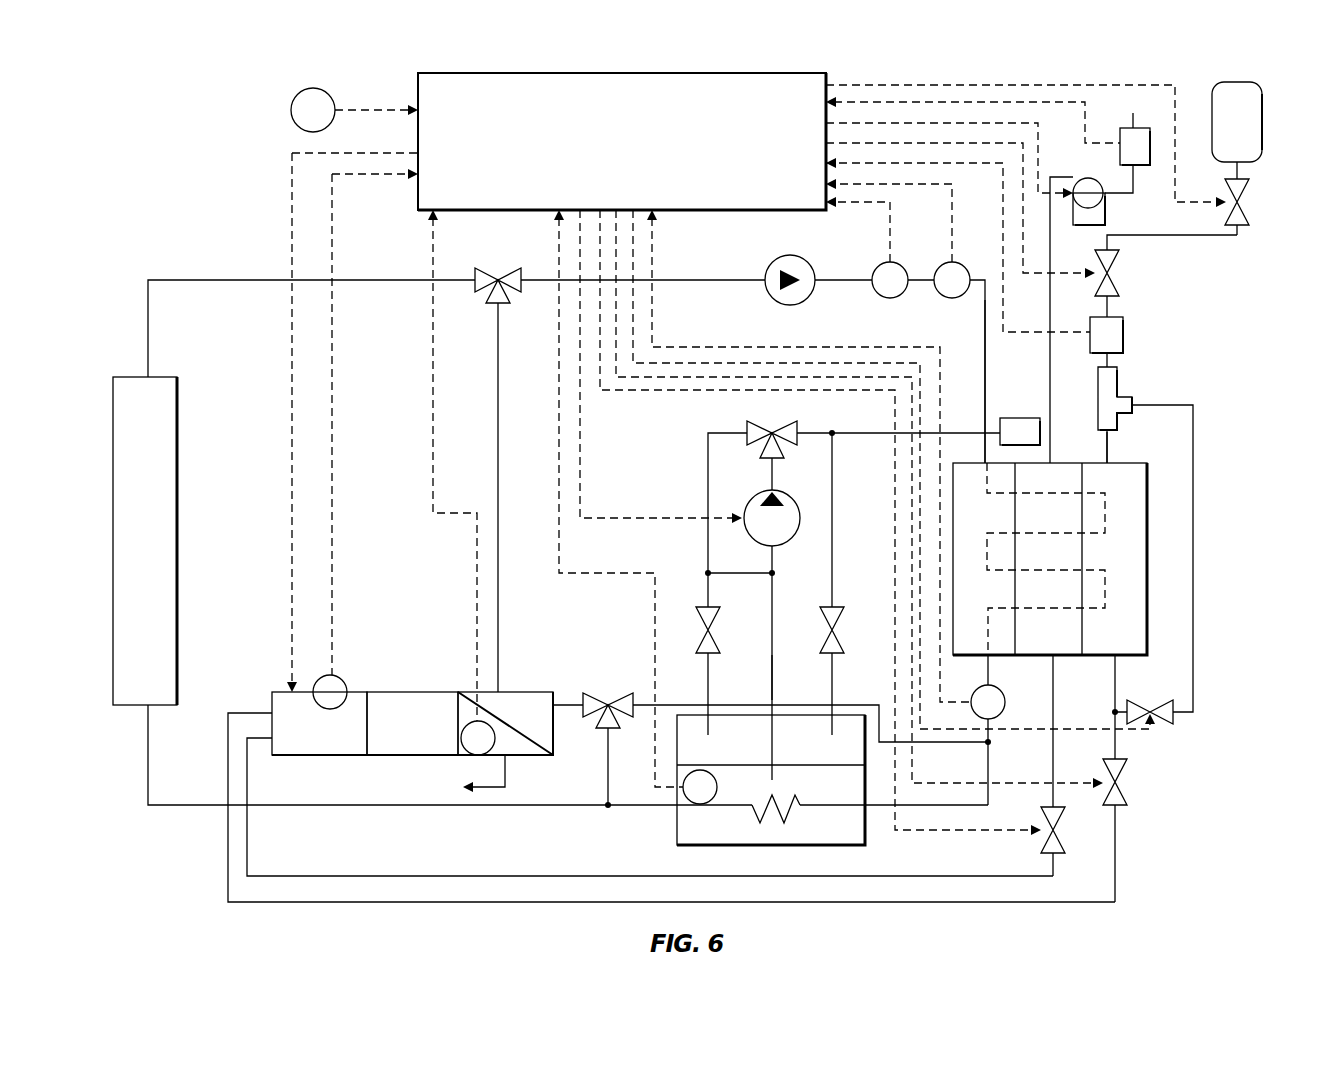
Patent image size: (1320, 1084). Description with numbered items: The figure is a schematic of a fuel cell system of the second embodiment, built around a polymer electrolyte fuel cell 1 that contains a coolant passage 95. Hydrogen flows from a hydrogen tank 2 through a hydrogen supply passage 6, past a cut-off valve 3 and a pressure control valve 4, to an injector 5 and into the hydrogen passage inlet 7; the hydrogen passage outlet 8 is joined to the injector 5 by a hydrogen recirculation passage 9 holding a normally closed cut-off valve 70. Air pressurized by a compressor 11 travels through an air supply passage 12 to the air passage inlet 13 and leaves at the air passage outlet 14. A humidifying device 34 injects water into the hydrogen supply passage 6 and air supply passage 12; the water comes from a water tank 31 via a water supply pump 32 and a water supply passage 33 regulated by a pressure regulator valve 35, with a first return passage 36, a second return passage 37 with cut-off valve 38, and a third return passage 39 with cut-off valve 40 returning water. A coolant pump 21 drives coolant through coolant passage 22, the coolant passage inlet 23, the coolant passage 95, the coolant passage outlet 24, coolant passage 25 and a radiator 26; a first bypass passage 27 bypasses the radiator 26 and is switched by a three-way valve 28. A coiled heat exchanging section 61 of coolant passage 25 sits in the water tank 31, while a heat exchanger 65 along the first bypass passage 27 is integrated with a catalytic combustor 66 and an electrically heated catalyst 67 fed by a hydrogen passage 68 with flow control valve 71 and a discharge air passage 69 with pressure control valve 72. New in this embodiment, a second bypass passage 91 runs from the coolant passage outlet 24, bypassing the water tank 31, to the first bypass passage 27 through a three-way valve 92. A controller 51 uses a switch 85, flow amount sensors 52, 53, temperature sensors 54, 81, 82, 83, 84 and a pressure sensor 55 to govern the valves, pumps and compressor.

The fuel cell 1 is at (1165, 548).
The hydrogen tank 2 is at (1263, 122).
The cut-off valve 3 is at (1250, 218).
The pressure control valve 4 is at (1122, 262).
The injector 5 is at (1119, 375).
The hydrogen supply passage 6 is at (1170, 237).
The hydrogen passage inlet 7 is at (1110, 445).
The hydrogen passage outlet 8 is at (1117, 665).
The hydrogen recirculation passage 9 is at (1194, 450).
The compressor 11 is at (1083, 180).
The air supply passage 12 is at (1050, 228).
The air passage inlet 13 is at (1050, 405).
The air passage outlet 14 is at (1055, 683).
The coolant pump 21 is at (768, 290).
The coolant passage 22 is at (345, 280).
The coolant passage inlet 23 is at (985, 447).
The coolant passage outlet 24 is at (990, 665).
The coolant passage 25 is at (470, 808).
The radiator 26 is at (180, 410).
The first bypass passage 27 is at (500, 478).
The three-way valve 28 is at (480, 286).
The water tank 31 is at (865, 828).
The water supply pump 32 is at (795, 500).
The water supply passage 33 is at (885, 436).
The humidifying device 34 is at (1015, 418).
The pressure regulator valve 35 is at (785, 422).
The first return passage 36 is at (705, 455).
The second return passage 37 is at (835, 508).
The cut-off valve 38 is at (845, 622).
The third return passage 39 is at (705, 590).
The cut-off valve 40 is at (715, 637).
The controller 51 is at (418, 84).
The flow amount sensor 52 is at (1124, 333).
The flow amount sensor 53 is at (1140, 152).
The temperature sensor 54 is at (878, 292).
The pressure sensor 55 is at (952, 300).
The heat exchanging section 61 is at (792, 812).
The heat exchanger 65 is at (520, 692).
The catalytic combustor 66 is at (405, 692).
The electrically heated catalyst 67 is at (280, 692).
The hydrogen passage 68 is at (1117, 852).
The discharge air passage 69 is at (965, 878).
The cut-off valve 70 is at (1163, 724).
The flow control valve 71 is at (1125, 775).
The pressure control valve 72 is at (1065, 822).
The temperature sensor 81 is at (683, 792).
The temperature sensor 82 is at (345, 684).
The temperature sensor 83 is at (1006, 702).
The temperature sensor 84 is at (462, 752).
The switch 85 is at (291, 110).
The second bypass passage 91 is at (777, 698).
The three-way valve 92 is at (612, 692).
The coolant passage 95 is at (1105, 507).